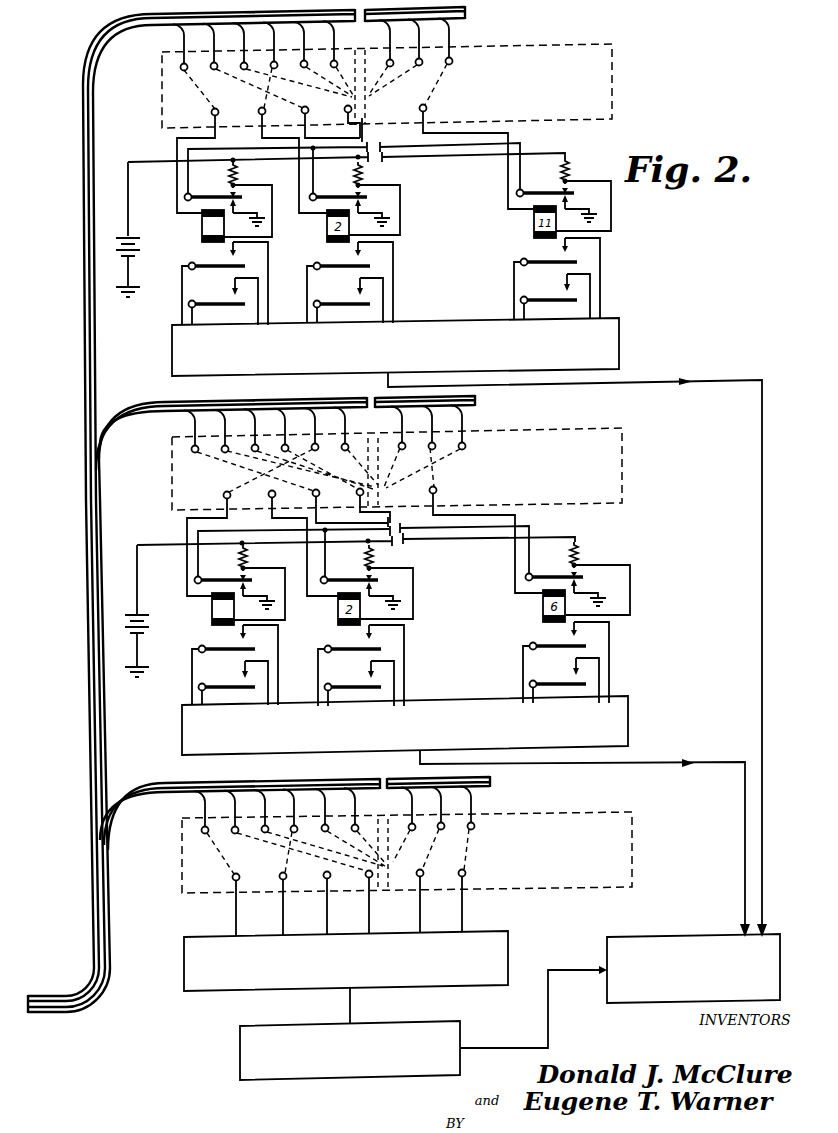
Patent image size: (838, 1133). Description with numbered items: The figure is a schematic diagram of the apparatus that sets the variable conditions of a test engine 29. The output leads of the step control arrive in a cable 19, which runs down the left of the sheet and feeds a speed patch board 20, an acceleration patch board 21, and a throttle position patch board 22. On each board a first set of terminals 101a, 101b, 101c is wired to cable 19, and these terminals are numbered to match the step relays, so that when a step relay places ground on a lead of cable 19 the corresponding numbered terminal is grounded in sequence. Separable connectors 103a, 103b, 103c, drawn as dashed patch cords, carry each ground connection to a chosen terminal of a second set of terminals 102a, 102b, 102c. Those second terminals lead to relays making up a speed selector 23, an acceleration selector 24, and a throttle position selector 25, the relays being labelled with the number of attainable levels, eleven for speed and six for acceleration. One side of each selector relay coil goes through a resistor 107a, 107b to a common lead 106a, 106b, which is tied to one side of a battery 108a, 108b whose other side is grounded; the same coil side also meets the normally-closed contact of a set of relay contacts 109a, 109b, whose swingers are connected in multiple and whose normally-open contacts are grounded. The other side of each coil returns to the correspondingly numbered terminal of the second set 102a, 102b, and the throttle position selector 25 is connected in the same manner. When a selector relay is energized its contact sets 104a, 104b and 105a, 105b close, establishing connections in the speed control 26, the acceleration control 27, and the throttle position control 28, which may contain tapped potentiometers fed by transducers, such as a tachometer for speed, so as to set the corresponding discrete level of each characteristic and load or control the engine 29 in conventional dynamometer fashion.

The cable 19 is at (97, 901).
The speed patch board 20 is at (522, 48).
The acceleration patch board 21 is at (518, 440).
The throttle position patch board 22 is at (567, 817).
The speed selector 23 is at (204, 243).
The acceleration selector 24 is at (247, 625).
The throttle position selector 25 is at (180, 966).
The speed control 26 is at (172, 349).
The acceleration control 27 is at (175, 729).
The throttle position control 28 is at (233, 1054).
The engine 29 is at (694, 938).
The first set of terminals 101a is at (176, 68).
The second set of terminals 102a is at (198, 112).
The separable connector 103a is at (200, 89).
The contact set 104a is at (217, 266).
The contact set 105a is at (220, 294).
The common lead 106a is at (162, 160).
The resistor 107a is at (228, 174).
The battery 108a is at (116, 249).
The relay contacts 109a is at (196, 197).
The first set of terminals 101b is at (176, 450).
The second set of terminals 102b is at (215, 496).
The separable connector 103b is at (236, 470).
The contact set 104b is at (240, 650).
The contact set 105b is at (250, 675).
The common lead 106b is at (440, 542).
The resistor 107b is at (247, 555).
The battery 108b is at (128, 619).
The relay contacts 109b is at (252, 590).
The first set of terminals 101c is at (180, 831).
The second set of terminals 102c is at (236, 882).
The separable connector 103c is at (218, 857).